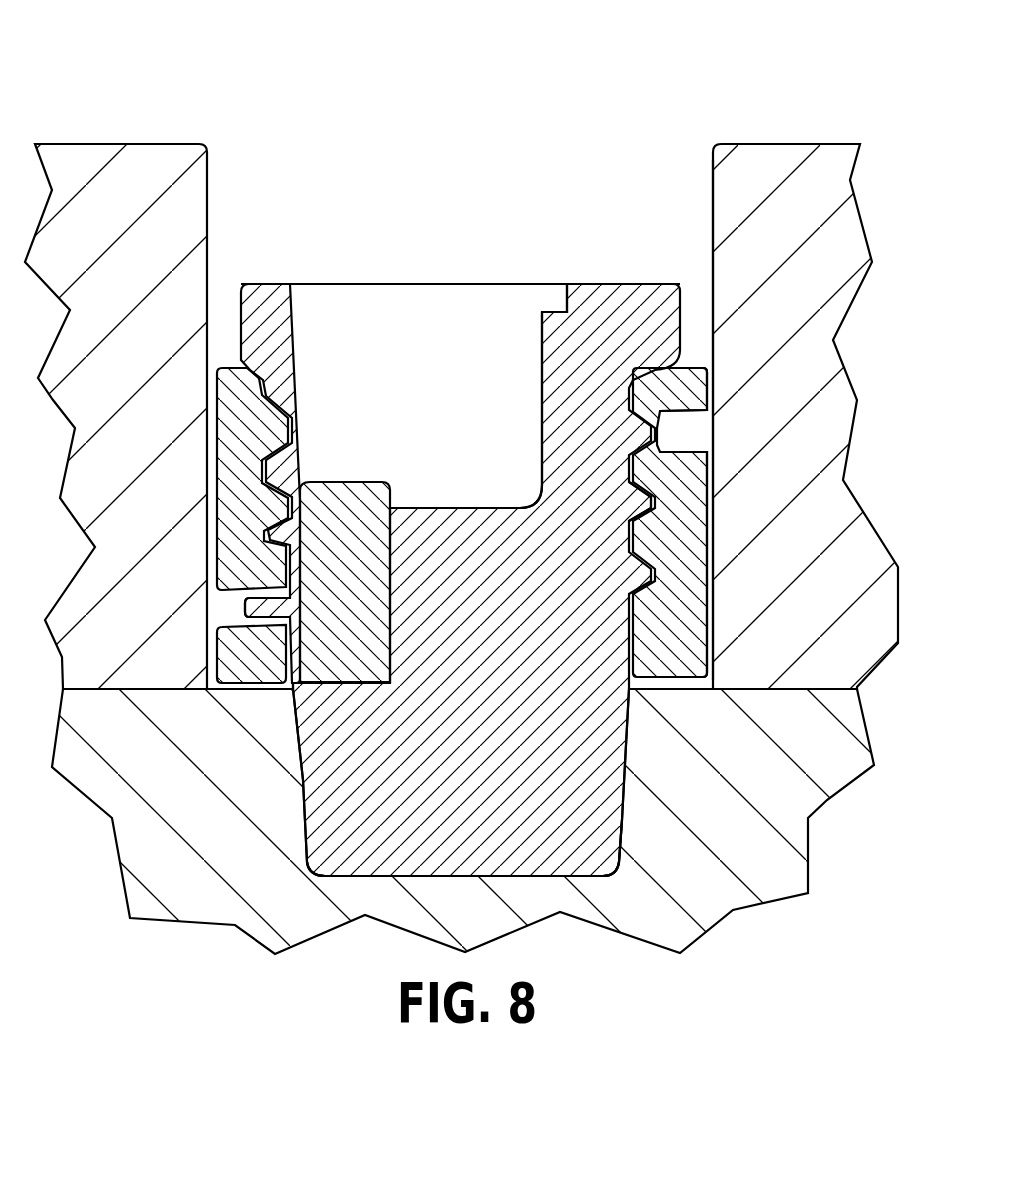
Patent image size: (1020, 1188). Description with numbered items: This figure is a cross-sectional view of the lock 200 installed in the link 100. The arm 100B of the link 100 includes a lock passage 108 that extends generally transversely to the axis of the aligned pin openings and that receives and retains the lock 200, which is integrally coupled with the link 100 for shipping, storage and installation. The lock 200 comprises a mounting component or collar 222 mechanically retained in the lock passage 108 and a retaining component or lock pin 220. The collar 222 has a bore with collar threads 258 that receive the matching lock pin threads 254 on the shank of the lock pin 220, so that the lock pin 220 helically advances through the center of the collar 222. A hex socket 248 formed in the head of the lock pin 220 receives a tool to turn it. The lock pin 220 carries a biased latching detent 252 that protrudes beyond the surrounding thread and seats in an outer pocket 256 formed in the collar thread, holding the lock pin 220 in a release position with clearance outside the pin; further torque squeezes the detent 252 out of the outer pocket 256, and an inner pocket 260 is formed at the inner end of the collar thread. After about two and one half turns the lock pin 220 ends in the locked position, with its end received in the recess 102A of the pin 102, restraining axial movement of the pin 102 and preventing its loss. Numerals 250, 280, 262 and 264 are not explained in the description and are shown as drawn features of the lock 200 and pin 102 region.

The link 100 is at (256, 98).
The arm 100B is at (790, 144).
The lock passage 108 is at (713, 182).
The pin 102 is at (808, 857).
The recess 102A is at (611, 797).
The lock 200 is at (411, 529).
The flange 250 is at (290, 298).
The lock pin 220 is at (362, 284).
The hex socket 248 is at (428, 322).
The notch 280 is at (530, 320).
The collar threads 258 is at (643, 512).
The inner pocket 260 is at (240, 605).
The stem 262 is at (380, 640).
The insert 264 is at (337, 482).
The latching detent 252 is at (240, 628).
The collar 222 is at (707, 525).
The outer pocket 256 is at (690, 412).
The lock pin threads 254 is at (712, 592).